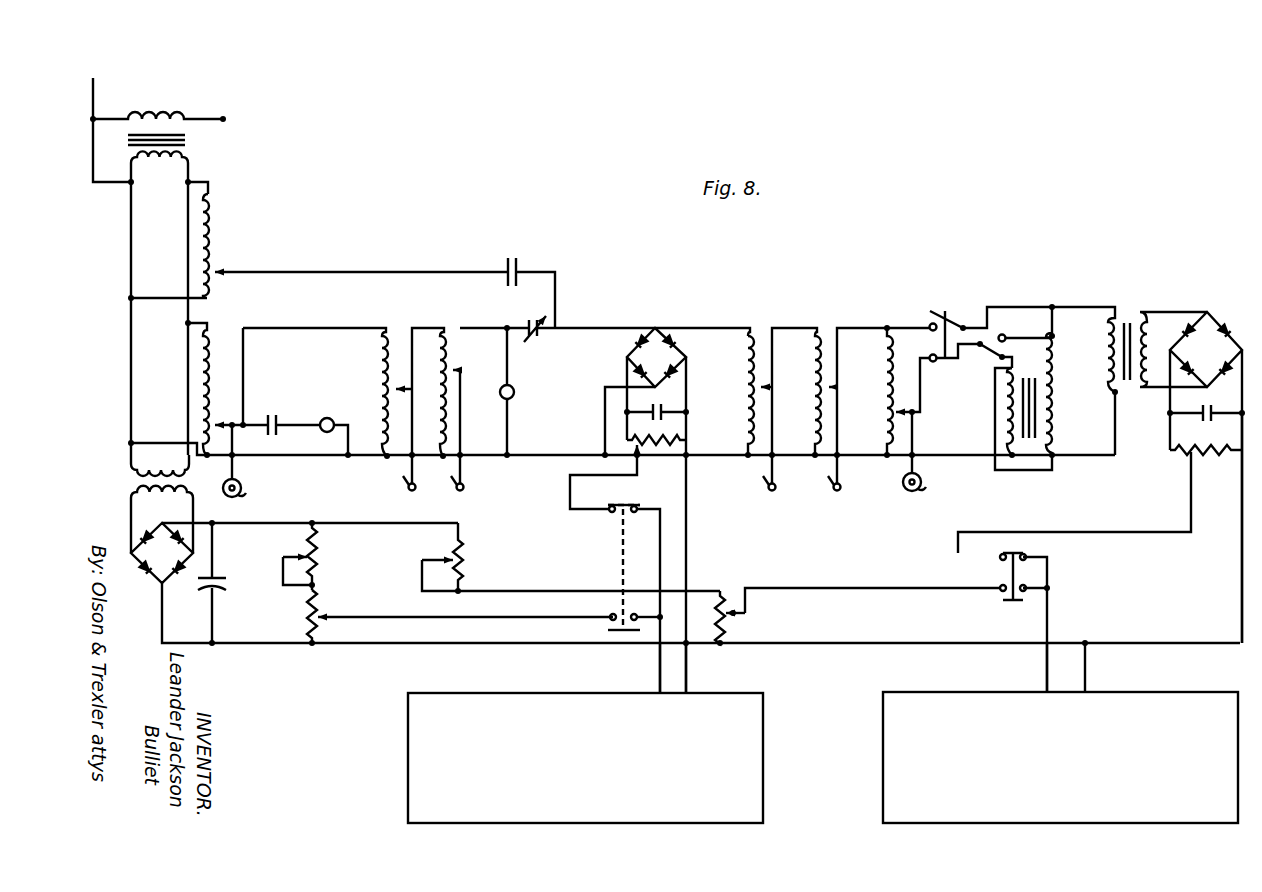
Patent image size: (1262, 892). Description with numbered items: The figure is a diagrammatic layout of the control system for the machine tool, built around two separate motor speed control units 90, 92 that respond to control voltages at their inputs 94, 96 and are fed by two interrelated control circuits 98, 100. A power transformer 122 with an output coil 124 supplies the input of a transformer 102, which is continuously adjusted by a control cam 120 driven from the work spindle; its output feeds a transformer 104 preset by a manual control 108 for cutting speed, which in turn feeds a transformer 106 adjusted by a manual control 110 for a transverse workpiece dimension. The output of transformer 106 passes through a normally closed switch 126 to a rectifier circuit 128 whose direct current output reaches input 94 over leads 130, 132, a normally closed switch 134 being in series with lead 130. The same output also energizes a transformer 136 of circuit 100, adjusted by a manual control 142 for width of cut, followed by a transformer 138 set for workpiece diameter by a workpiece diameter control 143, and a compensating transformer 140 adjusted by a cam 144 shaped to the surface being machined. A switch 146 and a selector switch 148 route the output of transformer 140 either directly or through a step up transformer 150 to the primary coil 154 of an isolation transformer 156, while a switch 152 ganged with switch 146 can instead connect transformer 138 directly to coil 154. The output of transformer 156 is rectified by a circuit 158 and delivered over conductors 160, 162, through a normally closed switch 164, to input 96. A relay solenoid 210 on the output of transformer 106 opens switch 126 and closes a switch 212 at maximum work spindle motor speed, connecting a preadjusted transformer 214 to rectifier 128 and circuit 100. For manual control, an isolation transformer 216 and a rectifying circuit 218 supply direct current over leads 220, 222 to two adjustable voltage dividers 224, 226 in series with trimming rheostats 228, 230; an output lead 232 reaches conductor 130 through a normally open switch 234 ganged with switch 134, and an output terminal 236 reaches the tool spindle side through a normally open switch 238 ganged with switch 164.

The motor speed control unit 90 is at (422, 768).
The motor speed control unit 92 is at (900, 772).
The input 94 is at (656, 690).
The input 96 is at (1046, 690).
The control circuit 98 is at (622, 318).
The control circuit 100 is at (1078, 300).
The transformer 102 is at (215, 340).
The transformer 104 is at (377, 378).
The transformer 106 is at (447, 346).
The manual control 108 is at (404, 486).
The manual control 110 is at (466, 486).
The control cam 120 is at (248, 490).
The transformer 122 is at (202, 139).
The output coil 124 is at (147, 162).
The normally closed switch 126 is at (536, 342).
The rectifier circuit 128 is at (691, 390).
The lead 130 is at (618, 477).
The lead 132 is at (690, 516).
The normally closed switch 134 is at (613, 522).
The transformer 136 is at (754, 340).
The transformer 138 is at (820, 340).
The transformer 140 is at (895, 345).
The manual control 142 is at (775, 498).
The workpiece diameter control 143 is at (838, 495).
The cam 144 is at (912, 494).
The switch 146 is at (942, 364).
The selector switch 148 is at (986, 352).
The step up transformer 150 is at (1052, 418).
The switch 152 is at (936, 318).
The primary coil 154 is at (1127, 320).
The isolation transformer 156 is at (1128, 395).
The rectifying circuit 158 is at (1169, 456).
The conductor 160 is at (1140, 532).
The conductor 162 is at (1228, 598).
The normally closed switch 164 is at (1034, 554).
The relay solenoid 210 is at (513, 396).
The switch 212 is at (514, 258).
The transformer 214 is at (218, 268).
The isolation transformer 216 is at (124, 478).
The rectifying circuit 218 is at (224, 593).
The lead 220 is at (395, 524).
The lead 222 is at (366, 646).
The adjustable voltage divider 224 is at (320, 606).
The adjustable voltage divider 226 is at (726, 624).
The trimming rheostat 228 is at (322, 556).
The trimming rheostat 230 is at (462, 563).
The output lead 232 is at (407, 618).
The normally open switch 234 is at (620, 600).
The output terminal 236 is at (732, 602).
The normally open switch 238 is at (998, 602).